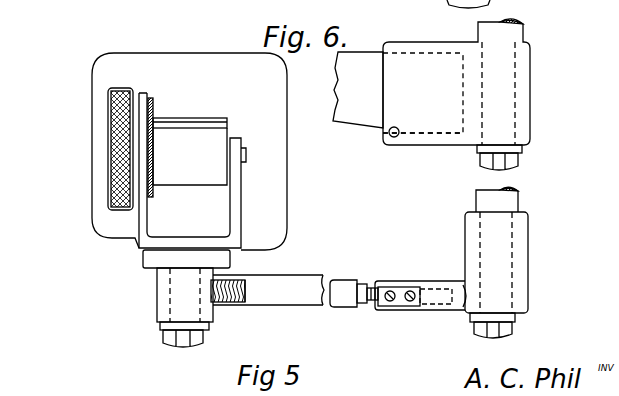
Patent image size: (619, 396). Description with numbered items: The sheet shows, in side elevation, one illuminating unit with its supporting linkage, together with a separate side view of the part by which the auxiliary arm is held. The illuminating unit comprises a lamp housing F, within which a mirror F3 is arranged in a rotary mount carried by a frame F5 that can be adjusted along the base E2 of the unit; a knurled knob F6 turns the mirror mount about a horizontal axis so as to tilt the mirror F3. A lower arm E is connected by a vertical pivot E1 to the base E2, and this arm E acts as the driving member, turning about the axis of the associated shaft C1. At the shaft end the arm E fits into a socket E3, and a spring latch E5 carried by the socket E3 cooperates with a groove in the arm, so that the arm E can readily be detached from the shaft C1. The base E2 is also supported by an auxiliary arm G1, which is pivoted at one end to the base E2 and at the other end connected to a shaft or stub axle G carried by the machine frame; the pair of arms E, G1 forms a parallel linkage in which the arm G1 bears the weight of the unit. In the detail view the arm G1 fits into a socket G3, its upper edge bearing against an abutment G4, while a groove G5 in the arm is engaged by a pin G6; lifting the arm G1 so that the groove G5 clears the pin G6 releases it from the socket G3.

In FIG. 5, the lamp housing F is at (268, 203).
In FIG. 5, the mirror F3 is at (227, 118).
In FIG. 5, the frame F5 is at (133, 225).
In FIG. 5, the knurled knob F6 is at (112, 142).
In FIG. 5, the lower arm E is at (300, 290).
In FIG. 5, the vertical pivot E1 is at (170, 298).
In FIG. 5, the base E2 is at (157, 261).
In FIG. 5, the socket E3 is at (403, 308).
In FIG. 5, the spring latch E5 is at (382, 287).
In FIG. 5, the shaft C1 is at (508, 205).
In FIG. 6, the shaft or stub axle G is at (508, 33).
In FIG. 6, the auxiliary arm G1 is at (347, 72).
In FIG. 6, the socket G3 is at (427, 138).
In FIG. 6, the abutment G4 is at (453, 53).
In FIG. 6, the groove G5 is at (393, 127).
In FIG. 6, the pin G6 is at (387, 140).